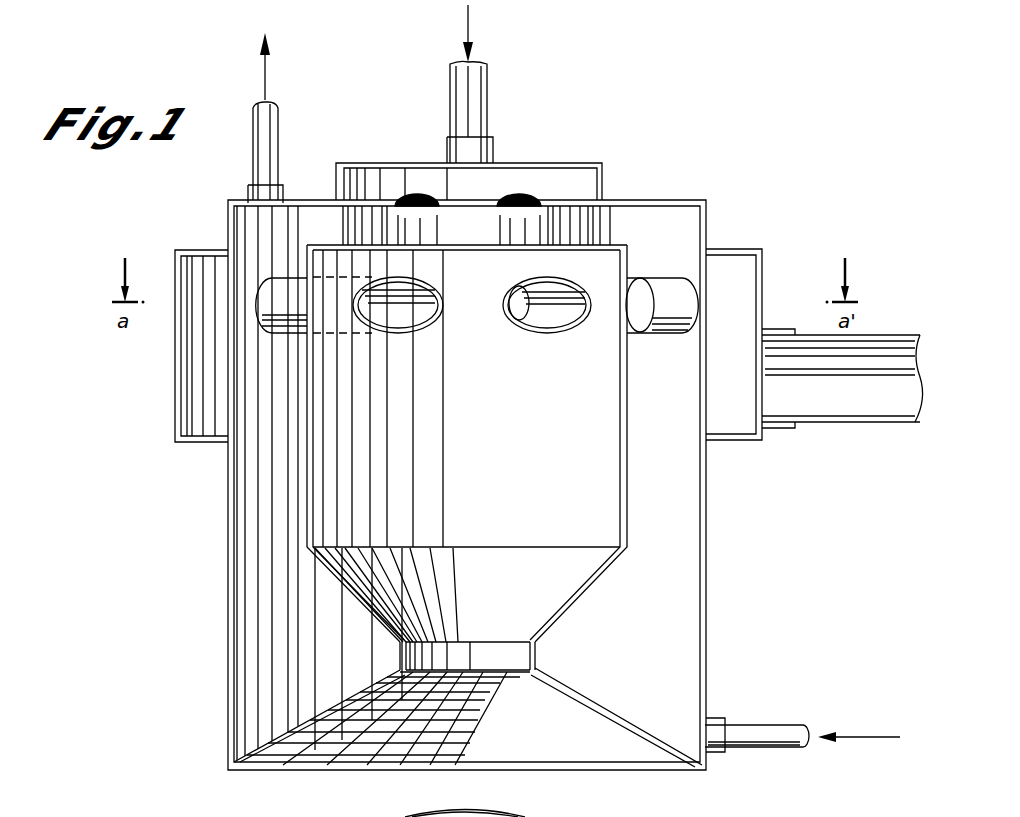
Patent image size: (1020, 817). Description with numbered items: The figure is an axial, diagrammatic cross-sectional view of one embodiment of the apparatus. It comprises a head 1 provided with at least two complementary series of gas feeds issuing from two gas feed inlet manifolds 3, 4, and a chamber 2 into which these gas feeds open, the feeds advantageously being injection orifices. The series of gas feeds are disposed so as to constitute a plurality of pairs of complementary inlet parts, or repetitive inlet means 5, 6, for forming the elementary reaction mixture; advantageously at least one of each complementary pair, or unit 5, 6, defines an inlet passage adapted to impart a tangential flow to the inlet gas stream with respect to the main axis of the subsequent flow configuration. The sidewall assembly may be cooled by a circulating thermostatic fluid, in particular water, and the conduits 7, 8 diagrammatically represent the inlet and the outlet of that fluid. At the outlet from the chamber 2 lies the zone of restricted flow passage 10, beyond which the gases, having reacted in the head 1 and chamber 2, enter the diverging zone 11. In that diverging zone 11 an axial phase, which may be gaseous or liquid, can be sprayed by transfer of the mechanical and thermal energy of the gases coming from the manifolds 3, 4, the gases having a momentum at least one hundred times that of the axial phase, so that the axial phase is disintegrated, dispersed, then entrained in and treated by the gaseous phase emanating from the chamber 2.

The head 1 is at (360, 444).
The chamber 2 is at (592, 482).
The gas feed inlet manifold 3 is at (822, 406).
The gas feed inlet manifold 4 is at (473, 97).
The repetitive inlet means 5 is at (577, 208).
The repetitive inlet means 6 is at (667, 292).
The conduit 7 is at (787, 745).
The conduit 8 is at (273, 122).
The zone of restricted flow passage 10 is at (517, 652).
The diverging zone 11 is at (343, 765).